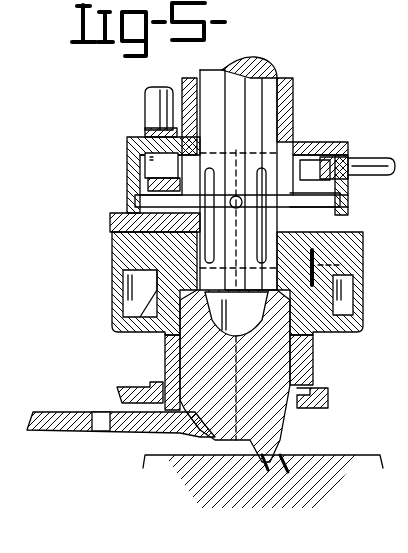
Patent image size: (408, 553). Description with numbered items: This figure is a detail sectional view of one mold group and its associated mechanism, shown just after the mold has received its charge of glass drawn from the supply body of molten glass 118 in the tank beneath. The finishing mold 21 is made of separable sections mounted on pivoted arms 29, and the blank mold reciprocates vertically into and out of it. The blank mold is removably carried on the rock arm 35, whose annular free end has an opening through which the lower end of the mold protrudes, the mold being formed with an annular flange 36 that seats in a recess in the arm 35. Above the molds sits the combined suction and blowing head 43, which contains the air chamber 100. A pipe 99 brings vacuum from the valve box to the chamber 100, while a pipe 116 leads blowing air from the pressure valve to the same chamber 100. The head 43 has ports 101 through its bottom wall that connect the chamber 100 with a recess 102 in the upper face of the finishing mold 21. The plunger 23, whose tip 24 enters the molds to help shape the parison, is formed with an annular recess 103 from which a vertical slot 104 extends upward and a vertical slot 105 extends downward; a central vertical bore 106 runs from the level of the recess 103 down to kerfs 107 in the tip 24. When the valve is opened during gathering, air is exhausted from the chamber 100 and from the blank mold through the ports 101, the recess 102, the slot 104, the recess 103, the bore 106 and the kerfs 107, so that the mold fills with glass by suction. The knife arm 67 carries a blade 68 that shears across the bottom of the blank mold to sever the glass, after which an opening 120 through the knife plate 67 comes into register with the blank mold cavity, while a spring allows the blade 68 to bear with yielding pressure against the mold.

The plunger 23 is at (277, 70).
The pipe 99 is at (145, 105).
The vertical slot 104 is at (214, 162).
The pipe 116 is at (370, 160).
The air chamber 100 is at (145, 160).
The suction and blowing head 43 is at (128, 178).
The ports 101 is at (135, 205).
The annular recess 103 is at (350, 200).
The recess 102 is at (125, 228).
The pivoted arms 29 is at (112, 255).
The vertical slot 105 is at (350, 243).
The central vertical bore 106 is at (340, 265).
The tip 24 is at (345, 305).
The kerfs 107 is at (168, 347).
The finishing mold 21 is at (315, 352).
The rock arm 35 is at (135, 390).
The annular flange 36 is at (322, 392).
The blade 68 is at (185, 425).
The knife arm 67 is at (60, 433).
The opening 120 is at (100, 433).
The molten glass 118 is at (325, 475).